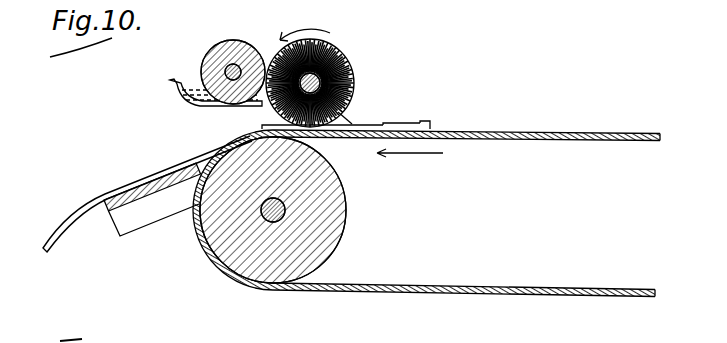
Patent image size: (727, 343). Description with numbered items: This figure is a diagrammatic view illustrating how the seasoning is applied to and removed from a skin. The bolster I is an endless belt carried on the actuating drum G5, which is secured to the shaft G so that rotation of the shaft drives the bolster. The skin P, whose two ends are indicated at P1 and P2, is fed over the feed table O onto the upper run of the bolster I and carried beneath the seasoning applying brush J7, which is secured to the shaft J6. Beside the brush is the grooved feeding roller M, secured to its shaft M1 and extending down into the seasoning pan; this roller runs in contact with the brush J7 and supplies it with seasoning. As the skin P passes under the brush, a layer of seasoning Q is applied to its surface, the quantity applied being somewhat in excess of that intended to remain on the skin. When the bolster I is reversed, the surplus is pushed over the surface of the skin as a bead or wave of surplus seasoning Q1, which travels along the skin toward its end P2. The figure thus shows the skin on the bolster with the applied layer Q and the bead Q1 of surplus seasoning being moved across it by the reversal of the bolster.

The bolster I is at (508, 134).
The actuating drum G5 is at (328, 183).
The shaft G is at (284, 213).
The end of the skin P1 is at (74, 220).
The feed table O is at (116, 190).
The grooved feeding roller M is at (234, 40).
The shaft M1 is at (263, 58).
The shaft J6 is at (340, 58).
The seasoning applying brush J7 is at (320, 83).
The skin P is at (262, 124).
The layer of seasoning Q is at (400, 124).
The bead of surplus seasoning Q1 is at (349, 119).
The end of the skin P2 is at (427, 123).